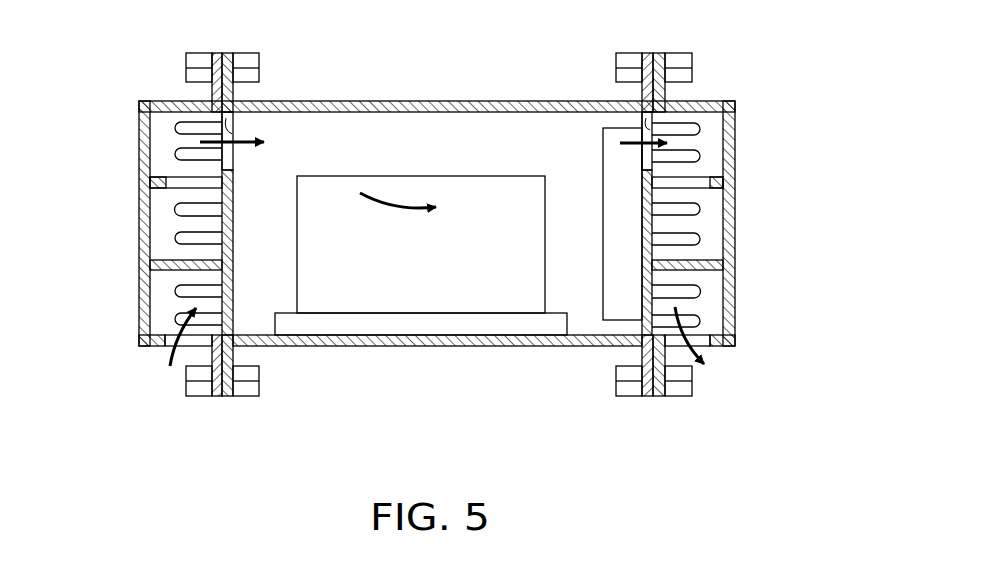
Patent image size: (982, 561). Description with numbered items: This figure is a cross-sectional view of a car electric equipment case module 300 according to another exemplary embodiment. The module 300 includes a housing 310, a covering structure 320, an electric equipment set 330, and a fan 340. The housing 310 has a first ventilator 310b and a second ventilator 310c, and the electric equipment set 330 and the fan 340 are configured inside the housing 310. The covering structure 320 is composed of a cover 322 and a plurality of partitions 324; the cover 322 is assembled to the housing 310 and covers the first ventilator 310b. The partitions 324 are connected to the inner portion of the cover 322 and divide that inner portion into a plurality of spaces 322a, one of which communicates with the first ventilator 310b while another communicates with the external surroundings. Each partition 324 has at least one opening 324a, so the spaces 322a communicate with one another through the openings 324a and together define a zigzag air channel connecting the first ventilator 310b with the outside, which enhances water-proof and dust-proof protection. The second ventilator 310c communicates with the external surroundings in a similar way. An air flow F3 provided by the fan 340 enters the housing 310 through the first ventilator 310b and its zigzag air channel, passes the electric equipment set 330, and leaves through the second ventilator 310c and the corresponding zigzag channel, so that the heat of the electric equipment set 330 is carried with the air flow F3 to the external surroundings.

The car electric equipment case module 300 is at (435, 250).
The housing 310 is at (370, 346).
The first ventilator 310b is at (232, 135).
The second ventilator 310c is at (648, 128).
The covering structure 320 is at (394, 179).
The cover 322 is at (168, 103).
The spaces 322a is at (165, 292).
The partitions 324 is at (168, 262).
The opening 324a is at (175, 172).
The electric equipment set 330 is at (508, 210).
The fan 340 is at (618, 308).
The air flow F3 is at (408, 205).